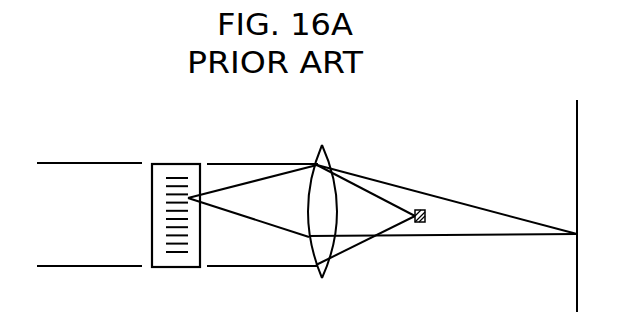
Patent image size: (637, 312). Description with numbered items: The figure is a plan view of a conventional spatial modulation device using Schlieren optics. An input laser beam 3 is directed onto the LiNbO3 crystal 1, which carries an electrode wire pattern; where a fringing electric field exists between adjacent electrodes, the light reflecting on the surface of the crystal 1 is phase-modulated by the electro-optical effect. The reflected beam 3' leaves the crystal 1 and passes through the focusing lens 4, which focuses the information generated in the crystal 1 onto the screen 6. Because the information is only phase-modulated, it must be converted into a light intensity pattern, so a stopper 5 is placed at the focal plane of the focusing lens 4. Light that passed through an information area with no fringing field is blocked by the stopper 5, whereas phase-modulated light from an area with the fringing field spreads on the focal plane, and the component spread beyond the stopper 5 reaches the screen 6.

The LiNbO3 crystal 1 is at (174, 267).
The input laser beam 3 is at (89, 192).
The reflected laser beam 3' is at (262, 191).
The focusing lens 4 is at (326, 152).
The stopper 5 is at (425, 216).
The screen 6 is at (577, 118).